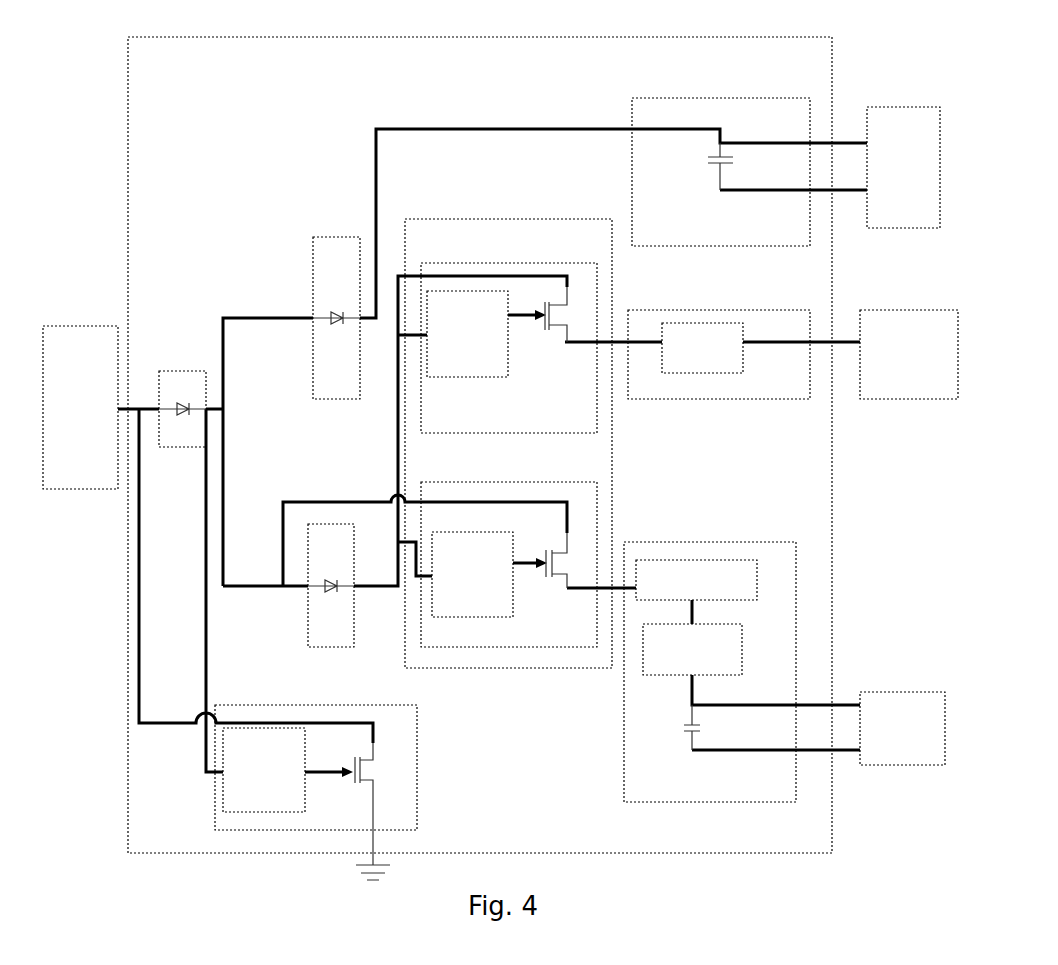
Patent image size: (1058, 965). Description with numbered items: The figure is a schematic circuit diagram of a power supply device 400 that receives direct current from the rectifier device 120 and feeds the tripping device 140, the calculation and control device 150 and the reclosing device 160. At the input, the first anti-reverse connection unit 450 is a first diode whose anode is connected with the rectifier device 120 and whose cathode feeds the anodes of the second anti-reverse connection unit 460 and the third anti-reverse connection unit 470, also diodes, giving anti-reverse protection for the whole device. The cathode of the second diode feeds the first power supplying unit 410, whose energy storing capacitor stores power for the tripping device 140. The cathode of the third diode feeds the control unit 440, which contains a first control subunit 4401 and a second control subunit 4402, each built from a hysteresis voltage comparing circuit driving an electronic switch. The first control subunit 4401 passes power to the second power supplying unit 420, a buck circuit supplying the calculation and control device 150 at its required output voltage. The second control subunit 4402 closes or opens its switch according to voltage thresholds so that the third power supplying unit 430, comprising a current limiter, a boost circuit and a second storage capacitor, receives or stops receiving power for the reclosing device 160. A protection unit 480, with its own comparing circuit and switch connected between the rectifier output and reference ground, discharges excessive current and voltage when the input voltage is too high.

The power supply device 400 is at (683, 37).
The first power supplying unit 410 is at (730, 97).
The second power supplying unit 420 is at (727, 310).
The third power supplying unit 430 is at (710, 542).
The control unit 440 is at (465, 218).
The first control subunit 4401 is at (509, 265).
The second control subunit 4402 is at (510, 480).
The first anti-reverse connection unit 450 is at (182, 370).
The second anti-reverse connection unit 460 is at (337, 238).
The third anti-reverse connection unit 470 is at (337, 647).
The protection unit 480 is at (416, 817).
The rectifier device 120 is at (90, 326).
The tripping device 140 is at (903, 106).
The calculation and control device 150 is at (885, 310).
The reclosing device 160 is at (897, 690).